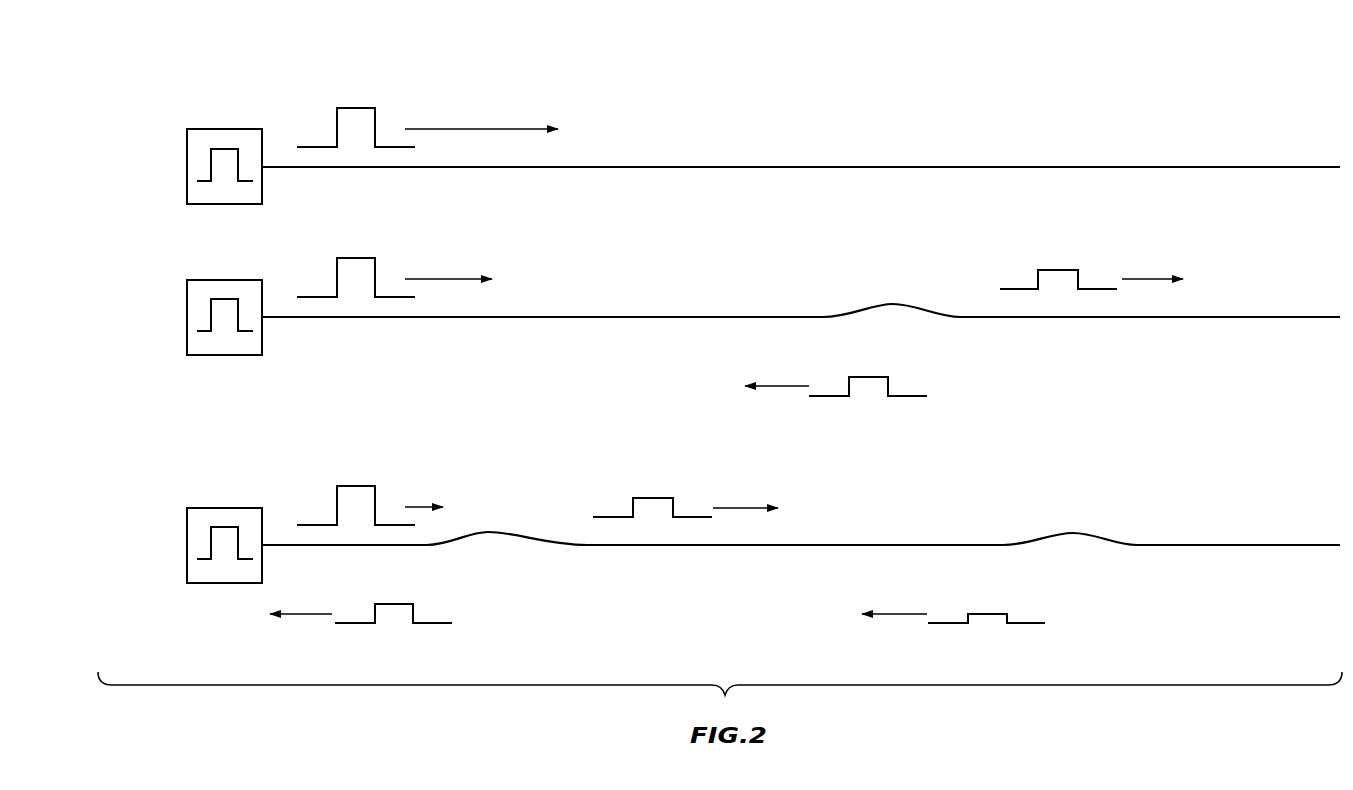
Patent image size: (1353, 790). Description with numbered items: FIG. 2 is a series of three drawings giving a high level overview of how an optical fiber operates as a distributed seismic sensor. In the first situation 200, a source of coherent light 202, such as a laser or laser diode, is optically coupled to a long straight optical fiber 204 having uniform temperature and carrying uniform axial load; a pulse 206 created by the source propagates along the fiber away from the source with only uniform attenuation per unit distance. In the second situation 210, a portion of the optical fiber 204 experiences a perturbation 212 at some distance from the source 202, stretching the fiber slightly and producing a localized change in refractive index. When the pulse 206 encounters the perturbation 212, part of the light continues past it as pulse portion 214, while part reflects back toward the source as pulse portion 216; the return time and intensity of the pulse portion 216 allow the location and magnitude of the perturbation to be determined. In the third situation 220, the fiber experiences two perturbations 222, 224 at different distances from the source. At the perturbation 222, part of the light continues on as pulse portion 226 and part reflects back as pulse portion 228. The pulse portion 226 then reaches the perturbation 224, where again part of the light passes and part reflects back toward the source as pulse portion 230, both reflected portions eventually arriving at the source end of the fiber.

The first situation 200 is at (176, 145).
The source of coherent light 202 is at (244, 129).
The optical fiber 204 is at (272, 164).
The pulse 206 is at (363, 107).
The second situation 210 is at (178, 316).
The perturbation 212 is at (903, 319).
The pulse portion 214 is at (1080, 276).
The pulse portion 216 is at (867, 378).
The third situation 220 is at (176, 557).
The perturbation 222 is at (512, 550).
The perturbation 224 is at (1090, 547).
The pulse portion 226 is at (657, 498).
The pulse portion 228 is at (392, 606).
The pulse portion 230 is at (985, 617).